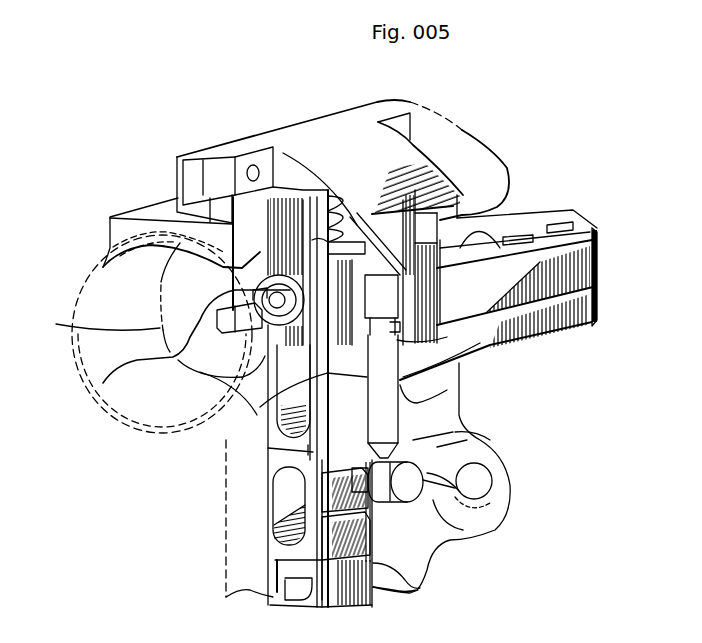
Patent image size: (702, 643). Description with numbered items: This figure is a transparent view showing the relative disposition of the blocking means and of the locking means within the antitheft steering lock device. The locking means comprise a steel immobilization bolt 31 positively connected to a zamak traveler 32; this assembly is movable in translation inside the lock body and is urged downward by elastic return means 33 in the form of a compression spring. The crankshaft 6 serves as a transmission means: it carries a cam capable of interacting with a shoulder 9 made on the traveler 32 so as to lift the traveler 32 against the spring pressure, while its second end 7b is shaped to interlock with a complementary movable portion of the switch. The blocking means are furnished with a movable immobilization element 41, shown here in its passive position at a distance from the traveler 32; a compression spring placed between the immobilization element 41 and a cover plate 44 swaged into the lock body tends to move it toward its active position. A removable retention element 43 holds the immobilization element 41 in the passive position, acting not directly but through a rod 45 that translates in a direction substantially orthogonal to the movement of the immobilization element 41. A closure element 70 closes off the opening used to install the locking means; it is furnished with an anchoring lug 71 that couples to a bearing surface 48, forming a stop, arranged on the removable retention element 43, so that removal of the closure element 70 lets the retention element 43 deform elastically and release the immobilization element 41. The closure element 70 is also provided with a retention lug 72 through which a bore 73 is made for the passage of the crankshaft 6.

The closure element 70 is at (292, 115).
The elastic return means 33 is at (363, 222).
The shoulder 9 is at (540, 218).
The retention lug 72 is at (103, 267).
The removable retention element 43 is at (575, 252).
The crankshaft 6 is at (60, 324).
The anchoring lug 71 is at (433, 303).
The second end 7b is at (103, 383).
The rod 45 is at (447, 390).
The bore 73 is at (187, 372).
The bearing surface 48 is at (260, 407).
The cover plate 44 is at (483, 500).
The immobilization element 41 is at (273, 525).
The traveler 32 is at (420, 590).
The immobilization bolt 31 is at (257, 593).